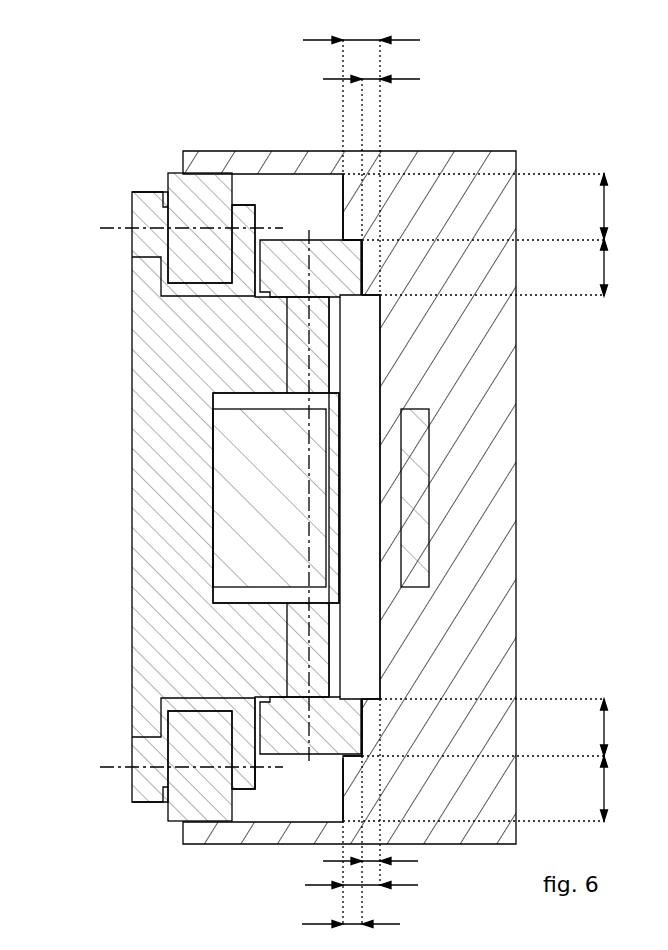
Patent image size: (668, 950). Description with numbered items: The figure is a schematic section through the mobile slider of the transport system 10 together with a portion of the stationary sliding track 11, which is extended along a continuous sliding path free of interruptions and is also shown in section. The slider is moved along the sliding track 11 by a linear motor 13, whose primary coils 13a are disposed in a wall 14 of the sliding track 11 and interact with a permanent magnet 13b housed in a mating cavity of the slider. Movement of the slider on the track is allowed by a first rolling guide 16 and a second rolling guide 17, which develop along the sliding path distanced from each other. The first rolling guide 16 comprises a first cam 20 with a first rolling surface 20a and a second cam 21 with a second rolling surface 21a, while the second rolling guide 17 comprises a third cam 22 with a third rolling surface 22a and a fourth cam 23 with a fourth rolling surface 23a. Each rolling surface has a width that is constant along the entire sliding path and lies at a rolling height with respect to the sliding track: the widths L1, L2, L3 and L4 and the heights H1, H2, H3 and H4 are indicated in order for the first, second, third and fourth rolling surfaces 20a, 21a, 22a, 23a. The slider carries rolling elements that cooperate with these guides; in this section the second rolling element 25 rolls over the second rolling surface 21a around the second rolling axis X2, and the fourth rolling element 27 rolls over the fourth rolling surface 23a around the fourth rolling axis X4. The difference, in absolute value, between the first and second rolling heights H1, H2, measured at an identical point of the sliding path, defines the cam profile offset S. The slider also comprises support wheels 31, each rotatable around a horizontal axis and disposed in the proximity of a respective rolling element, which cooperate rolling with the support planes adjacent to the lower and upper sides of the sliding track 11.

The transport system 10 is at (146, 90).
The sliding track 11 is at (517, 582).
The linear motor 13 is at (390, 403).
The primary coils 13a is at (415, 498).
The permanent magnet 13b is at (252, 495).
The wall 14 is at (380, 340).
The first rolling guide 16 is at (405, 777).
The second rolling guide 17 is at (386, 177).
The first cam 20 is at (300, 787).
The first rolling surface 20a is at (343, 798).
The second cam 21 is at (362, 688).
The second rolling surface 21a is at (362, 713).
The third cam 22 is at (415, 190).
The third rolling surface 22a is at (343, 198).
The fourth cam 23 is at (400, 265).
The fourth rolling surface 23a is at (362, 268).
The second rolling element 25 is at (288, 728).
The fourth rolling element 27 is at (333, 257).
The support wheels 31 is at (185, 210).
The second rolling axis X2 is at (310, 672).
The fourth rolling axis X4 is at (310, 232).
The first rolling height H1 is at (370, 890).
The second rolling height H2 is at (365, 862).
The third rolling height H3 is at (363, 40).
The fourth rolling height H4 is at (372, 79).
The first rolling width L1 is at (604, 788).
The second rolling width L2 is at (604, 723).
The third rolling width L3 is at (604, 207).
The fourth rolling width L4 is at (604, 273).
The cam profile offset S is at (350, 922).